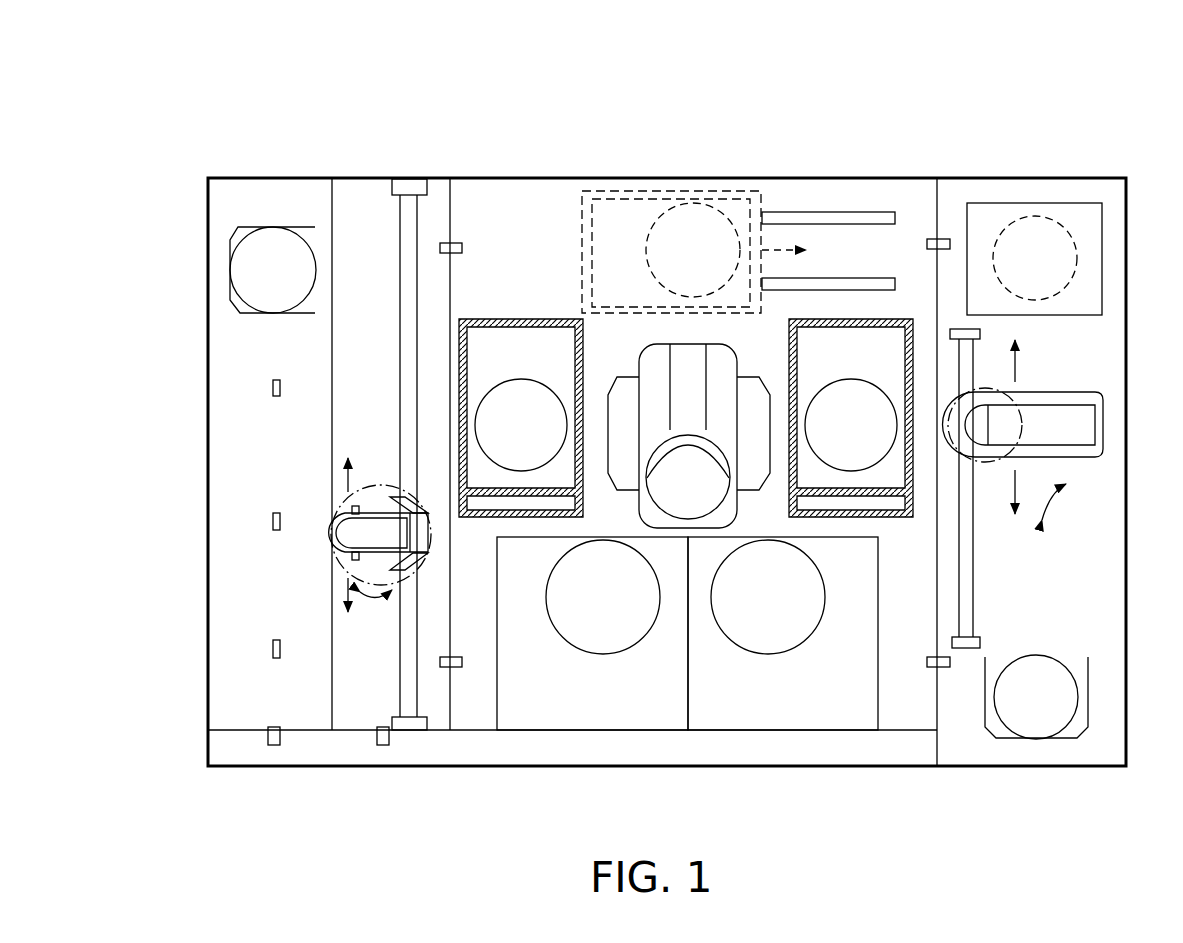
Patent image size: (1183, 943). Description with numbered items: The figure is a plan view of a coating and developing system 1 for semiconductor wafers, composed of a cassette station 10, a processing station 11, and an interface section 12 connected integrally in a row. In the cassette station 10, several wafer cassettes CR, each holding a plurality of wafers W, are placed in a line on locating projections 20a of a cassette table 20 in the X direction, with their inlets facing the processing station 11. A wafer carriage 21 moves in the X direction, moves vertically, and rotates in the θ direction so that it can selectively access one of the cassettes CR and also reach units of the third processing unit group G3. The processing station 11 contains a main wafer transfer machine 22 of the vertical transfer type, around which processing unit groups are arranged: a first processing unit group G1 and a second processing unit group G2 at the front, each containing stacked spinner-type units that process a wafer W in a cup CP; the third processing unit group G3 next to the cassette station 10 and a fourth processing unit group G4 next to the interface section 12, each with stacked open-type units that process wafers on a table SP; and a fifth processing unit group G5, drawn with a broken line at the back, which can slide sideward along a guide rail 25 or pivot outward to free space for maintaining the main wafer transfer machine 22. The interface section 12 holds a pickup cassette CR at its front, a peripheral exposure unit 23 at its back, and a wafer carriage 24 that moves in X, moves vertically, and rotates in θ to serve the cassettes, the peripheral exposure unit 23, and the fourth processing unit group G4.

The coating and developing system 1 is at (478, 104).
The cassette station 10 is at (356, 178).
The processing station 11 is at (569, 178).
The interface section 12 is at (1029, 176).
The cassette table 20 is at (242, 571).
The locating projections 20a is at (270, 392).
The wafer carriage 21 is at (340, 548).
The main wafer transfer machine 22 is at (646, 347).
The peripheral exposure unit 23 is at (1066, 203).
The wafer carriage 24 is at (1103, 420).
The guide rail 25 is at (862, 279).
The first processing unit group G1 is at (541, 732).
The second processing unit group G2 is at (766, 732).
The third processing unit group G3 is at (490, 319).
The fourth processing unit group G4 is at (905, 319).
The fifth processing unit group G5 is at (745, 191).
The table SP is at (519, 380).
The cup CP is at (630, 655).
The wafer cassette CR is at (236, 232).
The wafer W is at (282, 246).